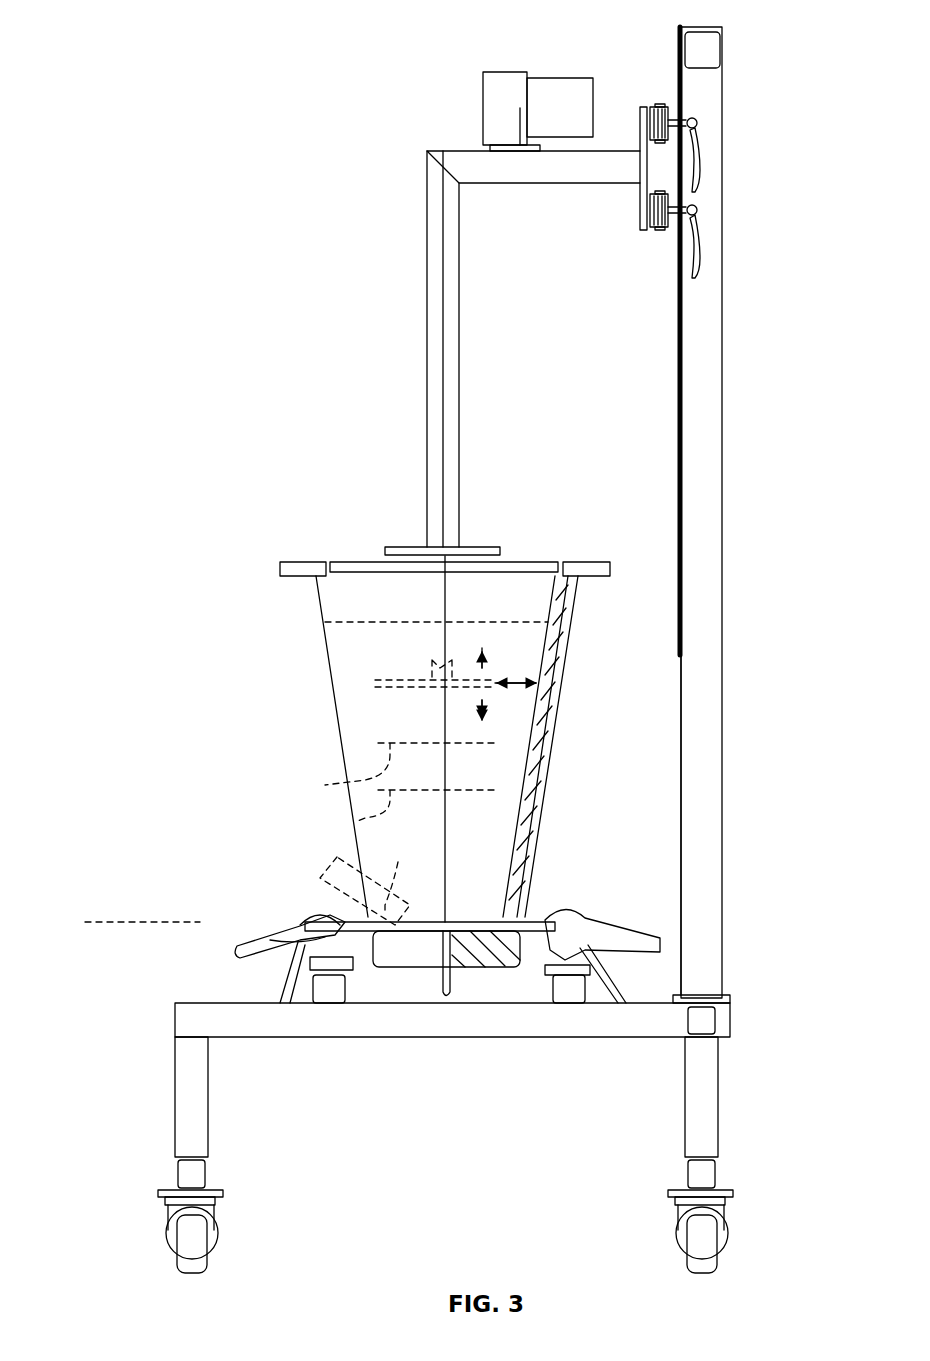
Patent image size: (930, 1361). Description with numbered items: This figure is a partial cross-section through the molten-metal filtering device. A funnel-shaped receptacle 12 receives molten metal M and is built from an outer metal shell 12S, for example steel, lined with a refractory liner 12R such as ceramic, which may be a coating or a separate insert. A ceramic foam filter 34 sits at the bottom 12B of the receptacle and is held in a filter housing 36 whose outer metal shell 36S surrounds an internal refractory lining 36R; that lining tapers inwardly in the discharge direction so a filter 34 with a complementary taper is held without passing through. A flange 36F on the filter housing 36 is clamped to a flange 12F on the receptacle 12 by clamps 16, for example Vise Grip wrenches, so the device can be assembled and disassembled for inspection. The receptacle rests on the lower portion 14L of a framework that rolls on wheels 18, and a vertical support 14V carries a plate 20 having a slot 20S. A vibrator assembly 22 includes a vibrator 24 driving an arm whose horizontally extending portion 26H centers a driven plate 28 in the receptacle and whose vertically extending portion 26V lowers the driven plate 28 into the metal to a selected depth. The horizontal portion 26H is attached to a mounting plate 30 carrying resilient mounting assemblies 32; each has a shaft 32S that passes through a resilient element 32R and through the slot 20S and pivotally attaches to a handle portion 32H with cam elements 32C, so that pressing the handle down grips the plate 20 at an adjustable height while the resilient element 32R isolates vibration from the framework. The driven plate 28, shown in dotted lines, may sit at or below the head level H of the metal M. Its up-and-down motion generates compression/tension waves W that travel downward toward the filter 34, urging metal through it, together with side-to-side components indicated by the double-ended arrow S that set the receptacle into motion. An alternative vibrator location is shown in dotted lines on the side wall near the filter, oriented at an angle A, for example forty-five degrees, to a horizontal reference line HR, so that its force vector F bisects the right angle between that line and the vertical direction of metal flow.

The receptacle 12 is at (330, 760).
The metal shell 12S is at (553, 755).
The refractory liner 12R is at (528, 813).
The hopper bottom 12B is at (497, 925).
The flange 12F is at (540, 925).
The vertical support 14V is at (700, 378).
The lower portion 14L is at (172, 1098).
The clamps 16 is at (262, 940).
The wheels 18 is at (708, 1238).
The plate 20 is at (676, 530).
The slot 20S is at (677, 378).
The vibrator assembly 22 is at (422, 138).
The vibrator 24 is at (568, 70).
The horizontally extending portion 26H is at (518, 178).
The vertically extending portion 26V is at (430, 323).
The driven plate 28 is at (403, 546).
The mounting plate 30 is at (647, 195).
The resilient mounting assemblies 32 is at (705, 175).
The resilient element 32R is at (661, 232).
The shaft 32S is at (690, 118).
The handle portion 32H is at (700, 232).
The cam elements 32C is at (696, 275).
The filter 34 is at (495, 970).
The filter housing 36 is at (375, 972).
The internal refractory lining 36R is at (515, 967).
The outer metal shell 36S is at (540, 966).
The flange 36F is at (562, 960).
The head level H is at (355, 622).
The molten metal M is at (348, 660).
The compression/tension waves W is at (325, 785).
The double-ended arrow S is at (520, 690).
The force vector F is at (365, 883).
The angle A is at (385, 915).
The horizontal reference line HR is at (142, 908).